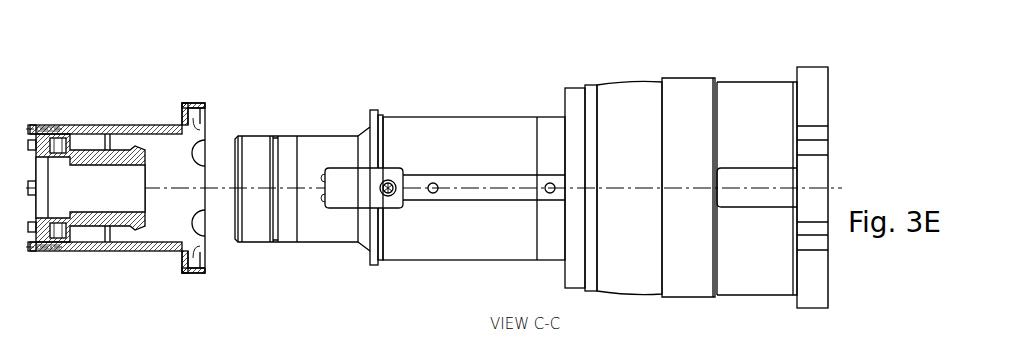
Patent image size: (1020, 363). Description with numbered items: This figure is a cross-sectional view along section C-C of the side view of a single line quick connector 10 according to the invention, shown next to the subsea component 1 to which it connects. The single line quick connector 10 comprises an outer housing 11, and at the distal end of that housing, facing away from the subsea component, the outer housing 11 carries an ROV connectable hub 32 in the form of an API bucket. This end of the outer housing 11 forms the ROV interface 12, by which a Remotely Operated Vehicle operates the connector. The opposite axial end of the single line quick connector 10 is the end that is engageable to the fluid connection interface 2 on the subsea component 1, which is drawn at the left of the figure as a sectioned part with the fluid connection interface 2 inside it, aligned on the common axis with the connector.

The subsea component 1 is at (113, 115).
The fluid connection interface 2 is at (130, 207).
The single line quick connector 10 is at (343, 100).
The outer housing 11 is at (498, 117).
The ROV interface 12 is at (835, 150).
The ROV connectable hub 32 is at (830, 78).